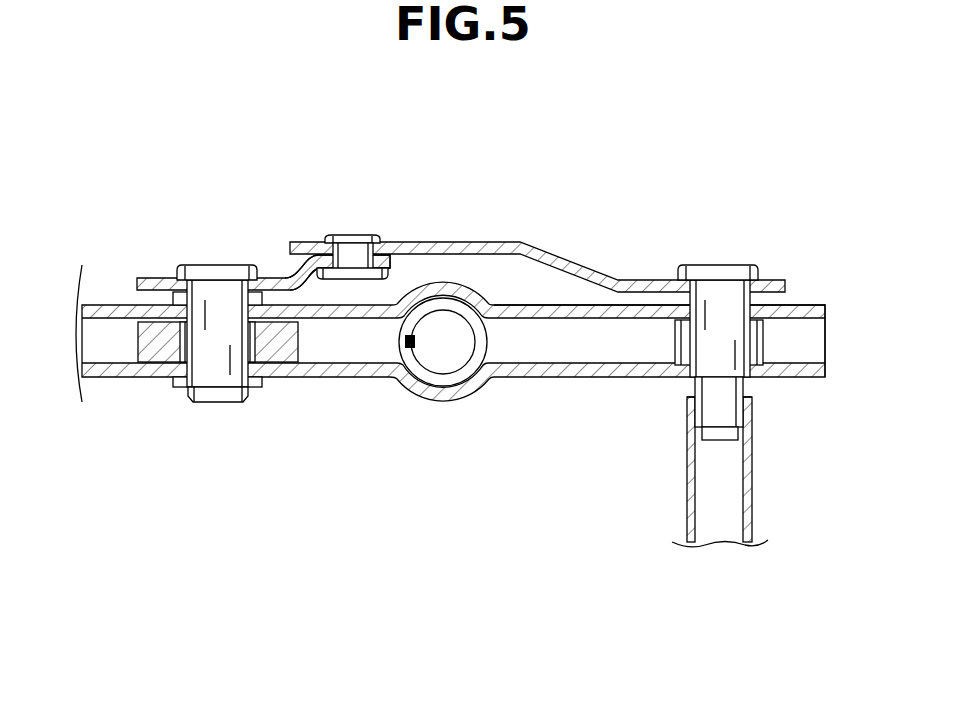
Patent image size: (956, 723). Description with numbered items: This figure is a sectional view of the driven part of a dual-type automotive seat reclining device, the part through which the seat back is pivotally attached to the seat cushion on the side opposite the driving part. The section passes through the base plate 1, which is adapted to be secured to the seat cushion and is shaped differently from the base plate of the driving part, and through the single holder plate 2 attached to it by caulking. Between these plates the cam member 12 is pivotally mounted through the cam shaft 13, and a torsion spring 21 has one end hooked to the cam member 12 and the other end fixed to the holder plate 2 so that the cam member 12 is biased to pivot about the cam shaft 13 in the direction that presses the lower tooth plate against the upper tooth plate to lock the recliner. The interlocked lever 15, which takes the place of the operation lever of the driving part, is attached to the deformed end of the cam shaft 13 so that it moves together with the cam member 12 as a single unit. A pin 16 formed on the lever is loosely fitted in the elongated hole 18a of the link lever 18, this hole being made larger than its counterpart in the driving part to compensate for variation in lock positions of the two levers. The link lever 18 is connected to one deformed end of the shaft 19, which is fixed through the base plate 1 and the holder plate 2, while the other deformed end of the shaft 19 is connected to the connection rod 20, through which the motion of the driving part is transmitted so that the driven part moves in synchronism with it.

The base plate 1 is at (350, 378).
The holder plate 2 is at (585, 320).
The cam member 12 is at (150, 355).
The cam shaft 13 is at (207, 265).
The interlocked lever 15 is at (148, 278).
The pin 16 is at (355, 235).
The link lever 18 is at (570, 257).
The elongated hole 18a is at (317, 248).
The shaft 19 is at (735, 265).
The connection rod 20 is at (752, 483).
The torsion spring 21 is at (455, 385).